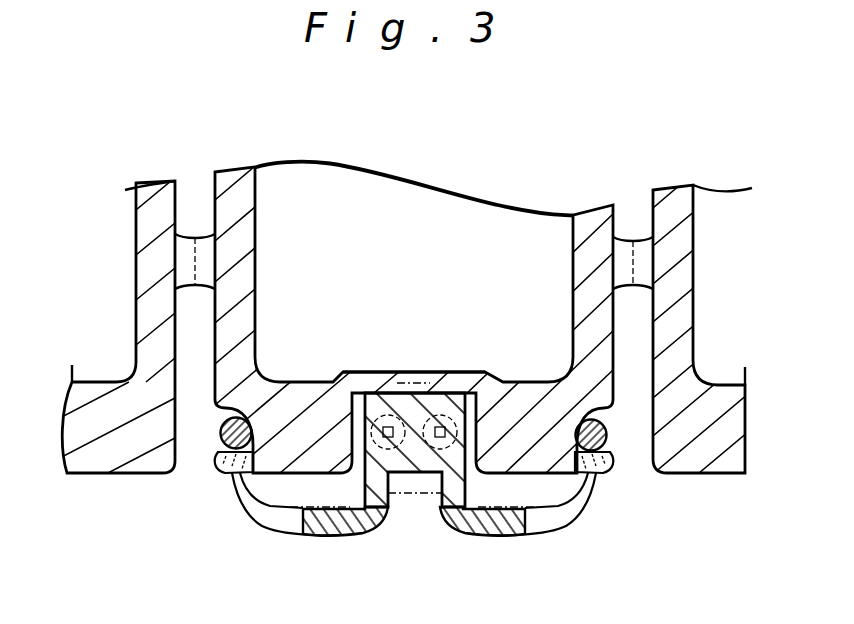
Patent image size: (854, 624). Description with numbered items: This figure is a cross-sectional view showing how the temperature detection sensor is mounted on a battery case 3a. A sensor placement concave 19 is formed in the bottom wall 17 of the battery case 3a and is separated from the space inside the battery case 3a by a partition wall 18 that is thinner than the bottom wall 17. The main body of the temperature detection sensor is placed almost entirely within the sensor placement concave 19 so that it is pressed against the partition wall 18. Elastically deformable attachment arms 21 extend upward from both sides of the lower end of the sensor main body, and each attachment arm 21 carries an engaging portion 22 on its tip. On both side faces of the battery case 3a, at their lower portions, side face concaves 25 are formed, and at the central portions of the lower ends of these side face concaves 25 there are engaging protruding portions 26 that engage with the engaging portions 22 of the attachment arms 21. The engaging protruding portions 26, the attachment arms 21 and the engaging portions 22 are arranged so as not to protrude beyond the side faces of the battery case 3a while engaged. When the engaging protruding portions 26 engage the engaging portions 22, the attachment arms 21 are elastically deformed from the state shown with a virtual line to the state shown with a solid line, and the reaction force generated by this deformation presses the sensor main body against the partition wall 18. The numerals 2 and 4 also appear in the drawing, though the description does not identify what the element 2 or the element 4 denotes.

The vehicle body panel 2 is at (103, 191).
The battery case 3a is at (432, 262).
The gap / slit 4 is at (193, 200).
The bottom wall 17 is at (523, 435).
The partition wall 18 is at (447, 372).
The sensor placement concave 19 is at (365, 443).
The attachment arms 21 is at (273, 480).
The engaging portion 22 is at (222, 440).
The side face concaves 25 is at (230, 407).
The engaging protruding portions 26 is at (247, 470).